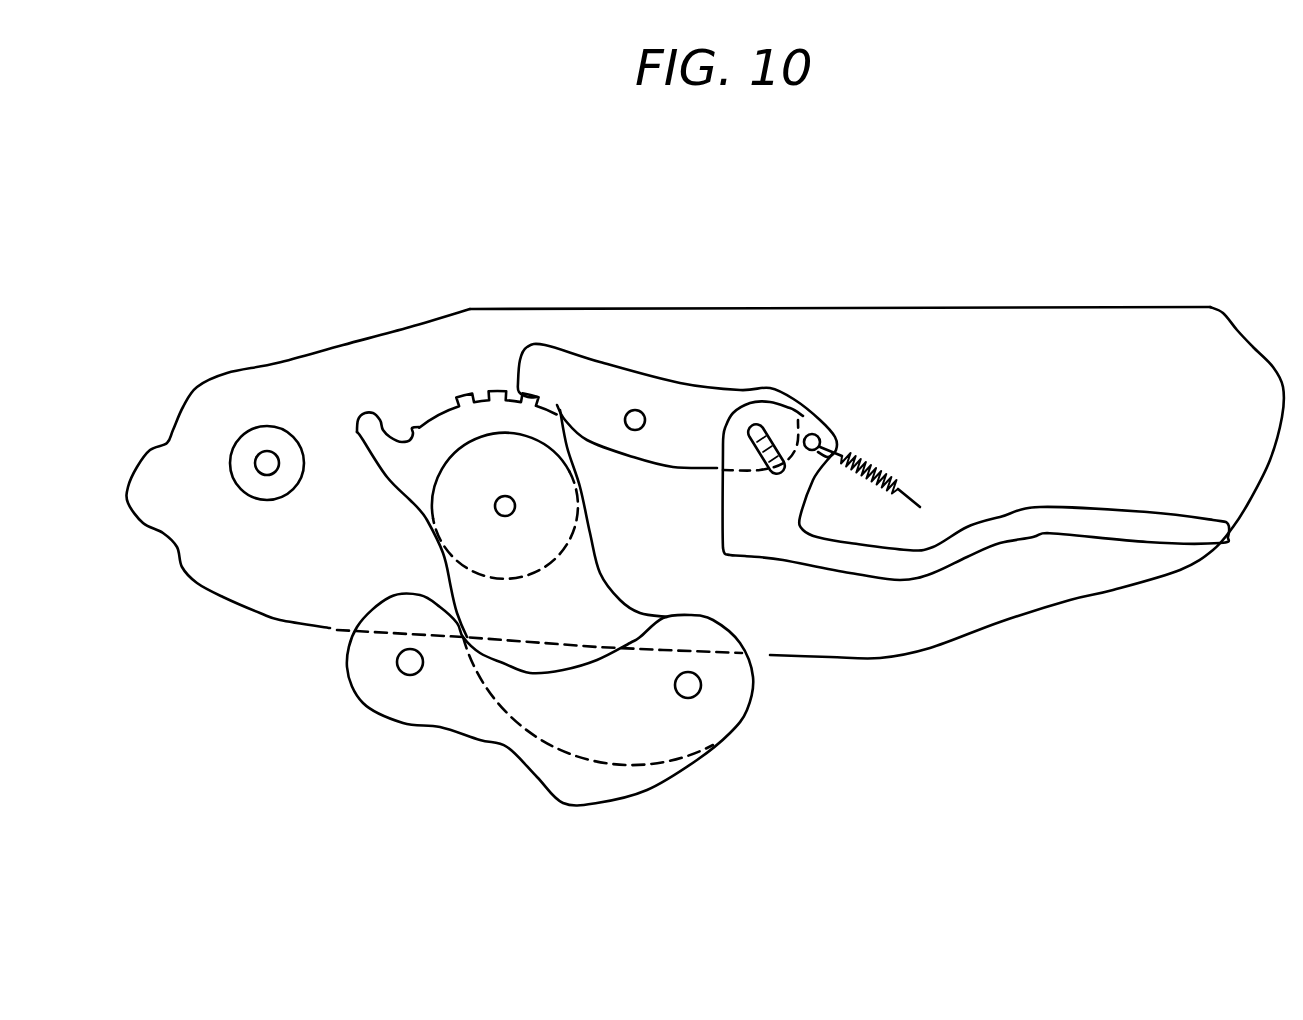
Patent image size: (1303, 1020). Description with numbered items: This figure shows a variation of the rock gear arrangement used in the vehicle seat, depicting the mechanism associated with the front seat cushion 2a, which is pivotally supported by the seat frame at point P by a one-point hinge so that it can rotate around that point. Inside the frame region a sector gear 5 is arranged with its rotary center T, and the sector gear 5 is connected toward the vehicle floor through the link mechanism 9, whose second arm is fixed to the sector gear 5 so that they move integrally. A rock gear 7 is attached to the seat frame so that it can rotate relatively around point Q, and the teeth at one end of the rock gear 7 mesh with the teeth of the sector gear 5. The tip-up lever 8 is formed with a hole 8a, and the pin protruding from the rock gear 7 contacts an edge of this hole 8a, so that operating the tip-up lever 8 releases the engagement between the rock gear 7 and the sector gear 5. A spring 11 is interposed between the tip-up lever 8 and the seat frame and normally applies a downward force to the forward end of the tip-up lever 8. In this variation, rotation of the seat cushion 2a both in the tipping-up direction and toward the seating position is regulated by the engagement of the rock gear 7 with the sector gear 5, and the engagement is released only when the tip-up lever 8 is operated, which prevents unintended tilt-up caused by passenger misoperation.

The front seat cushion 2a is at (1047, 310).
The sector gear 5 is at (438, 407).
The rock gear 7 is at (615, 366).
The tip-up lever 8 is at (1147, 511).
The hole 8a is at (770, 470).
The link mechanism 9 is at (487, 744).
The spring 11 is at (880, 471).
The point P is at (265, 463).
The rotary center T is at (505, 506).
The point Q is at (634, 428).